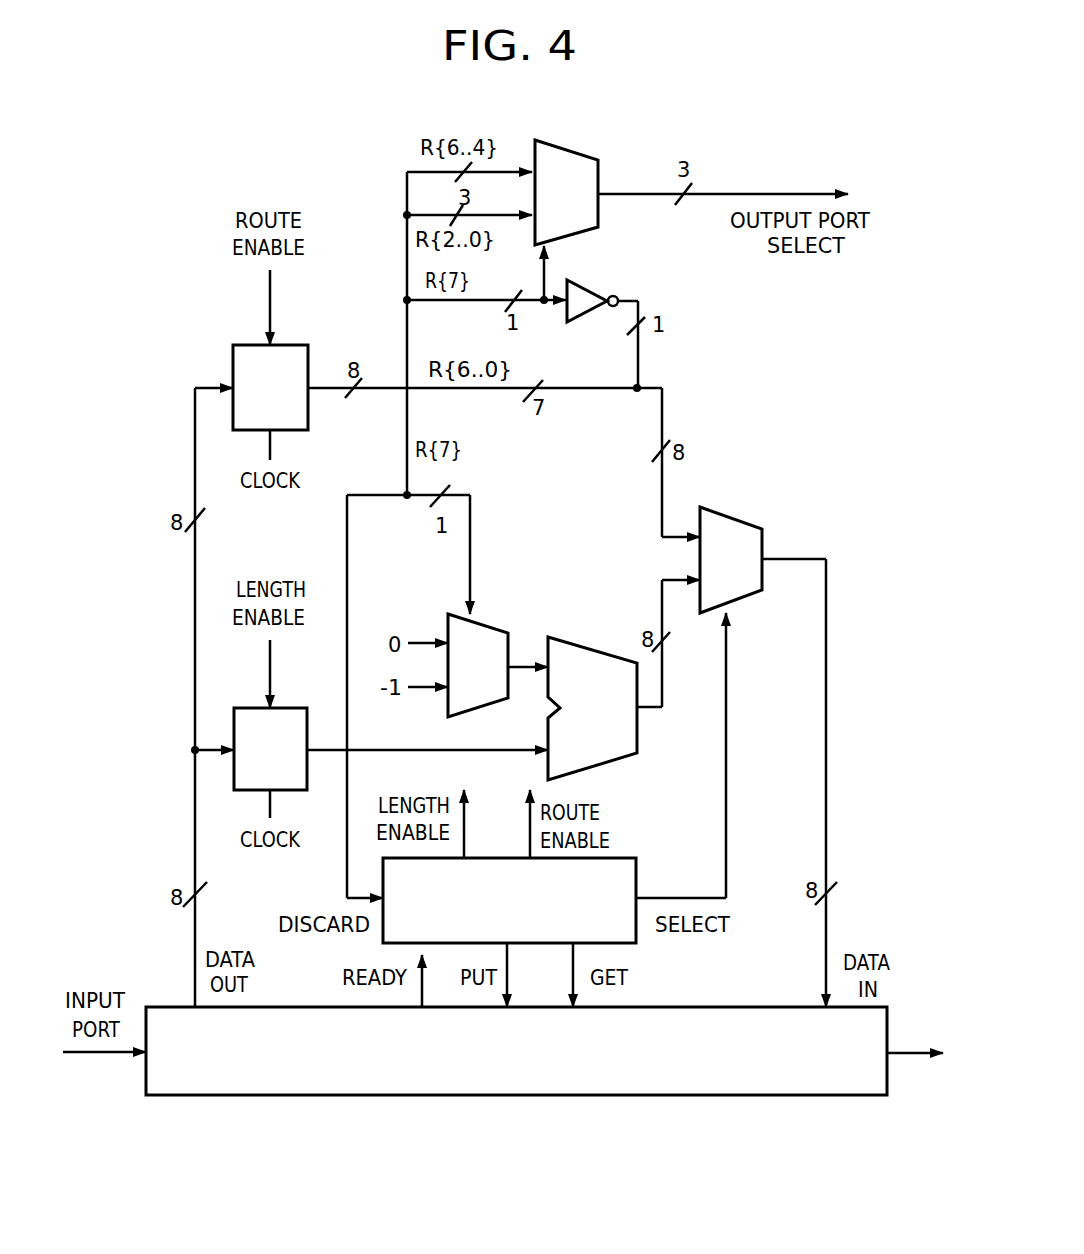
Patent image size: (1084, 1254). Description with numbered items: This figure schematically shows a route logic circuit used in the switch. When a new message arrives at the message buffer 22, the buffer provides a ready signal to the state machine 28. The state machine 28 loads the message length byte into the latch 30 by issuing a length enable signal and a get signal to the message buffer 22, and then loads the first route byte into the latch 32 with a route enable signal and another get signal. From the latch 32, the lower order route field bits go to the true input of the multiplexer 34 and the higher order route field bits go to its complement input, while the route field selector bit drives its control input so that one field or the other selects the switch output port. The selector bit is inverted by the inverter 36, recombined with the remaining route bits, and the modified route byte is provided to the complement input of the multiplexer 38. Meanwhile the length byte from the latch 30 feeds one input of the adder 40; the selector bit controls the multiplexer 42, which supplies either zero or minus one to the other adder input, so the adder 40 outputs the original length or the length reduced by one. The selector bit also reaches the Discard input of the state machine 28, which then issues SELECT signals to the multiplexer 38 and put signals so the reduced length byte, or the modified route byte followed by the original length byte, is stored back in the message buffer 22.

The message buffer 22 is at (746, 1093).
The state machine 28 is at (610, 866).
The latch 30 is at (290, 715).
The latch 32 is at (298, 351).
The multiplexer 34 is at (564, 153).
The inverter 36 is at (593, 290).
The multiplexer 38 is at (747, 528).
The adder 40 is at (590, 657).
The multiplexer 42 is at (483, 634).